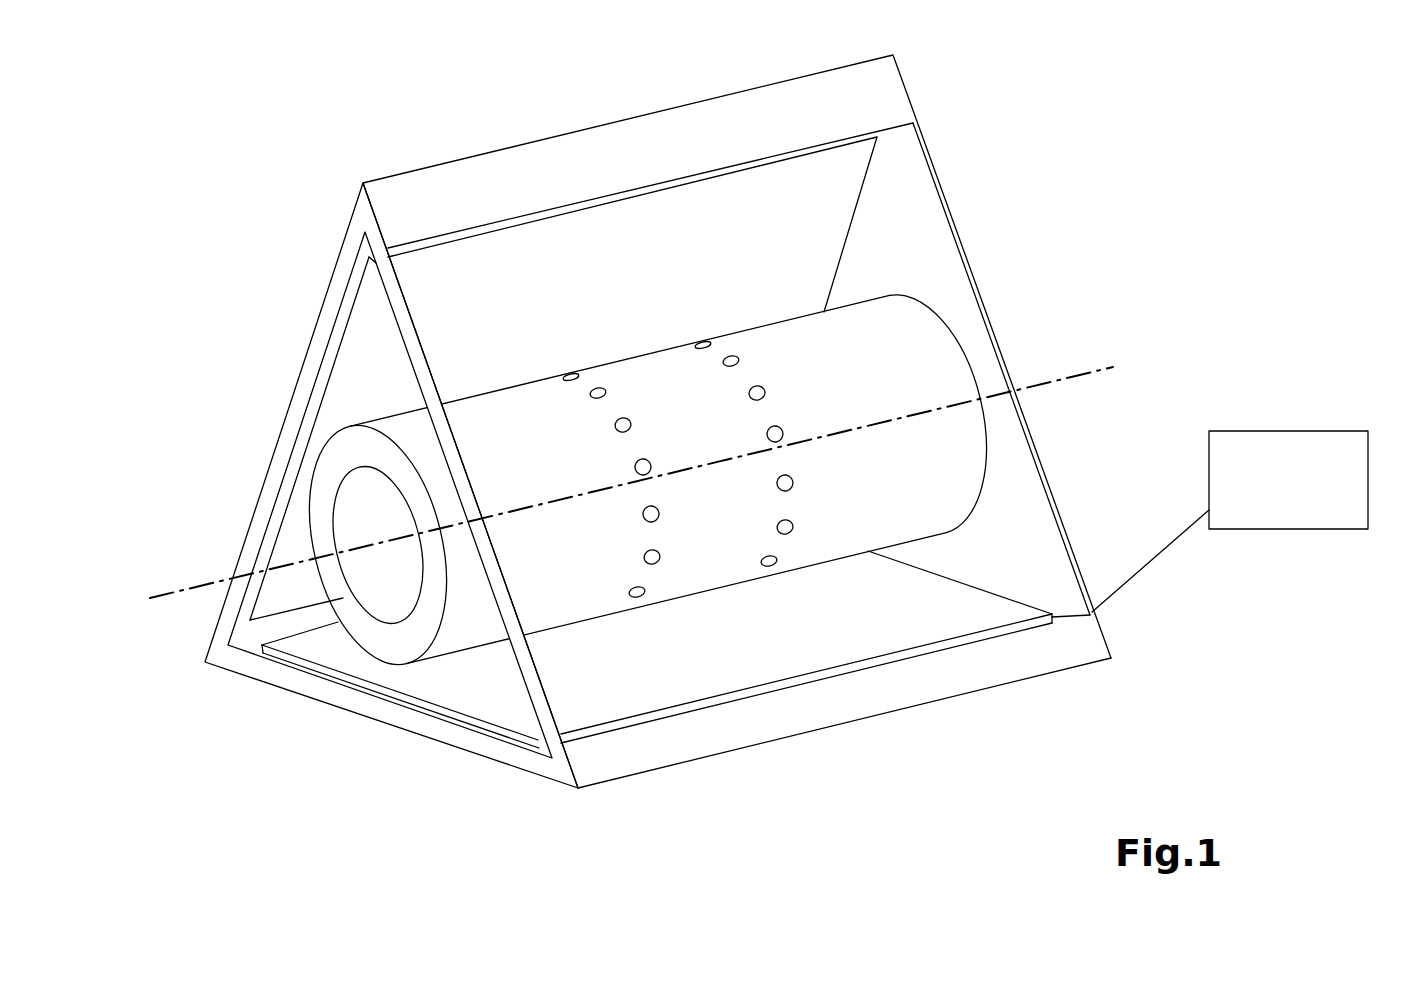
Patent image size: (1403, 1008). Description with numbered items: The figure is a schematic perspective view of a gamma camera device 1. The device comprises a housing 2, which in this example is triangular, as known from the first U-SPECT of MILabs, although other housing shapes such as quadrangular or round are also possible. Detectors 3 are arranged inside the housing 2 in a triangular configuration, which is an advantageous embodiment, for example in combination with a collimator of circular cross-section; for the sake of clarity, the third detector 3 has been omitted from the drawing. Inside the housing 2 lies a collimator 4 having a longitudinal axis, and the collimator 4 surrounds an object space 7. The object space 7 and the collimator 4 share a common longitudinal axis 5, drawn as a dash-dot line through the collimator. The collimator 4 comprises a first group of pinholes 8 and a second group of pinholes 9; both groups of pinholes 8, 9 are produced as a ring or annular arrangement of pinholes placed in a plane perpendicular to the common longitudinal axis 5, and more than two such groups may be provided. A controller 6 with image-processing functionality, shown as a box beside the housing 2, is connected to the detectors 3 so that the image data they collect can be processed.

The gamma camera device 1 is at (1002, 190).
The housing 2 is at (408, 197).
The detectors 3 is at (258, 592).
The collimator 4 is at (347, 452).
The longitudinal axis 5 is at (213, 585).
The controller 6 is at (1247, 431).
The object space 7 is at (388, 567).
The first group of pinholes 8 is at (651, 514).
The second group of pinholes 9 is at (785, 483).